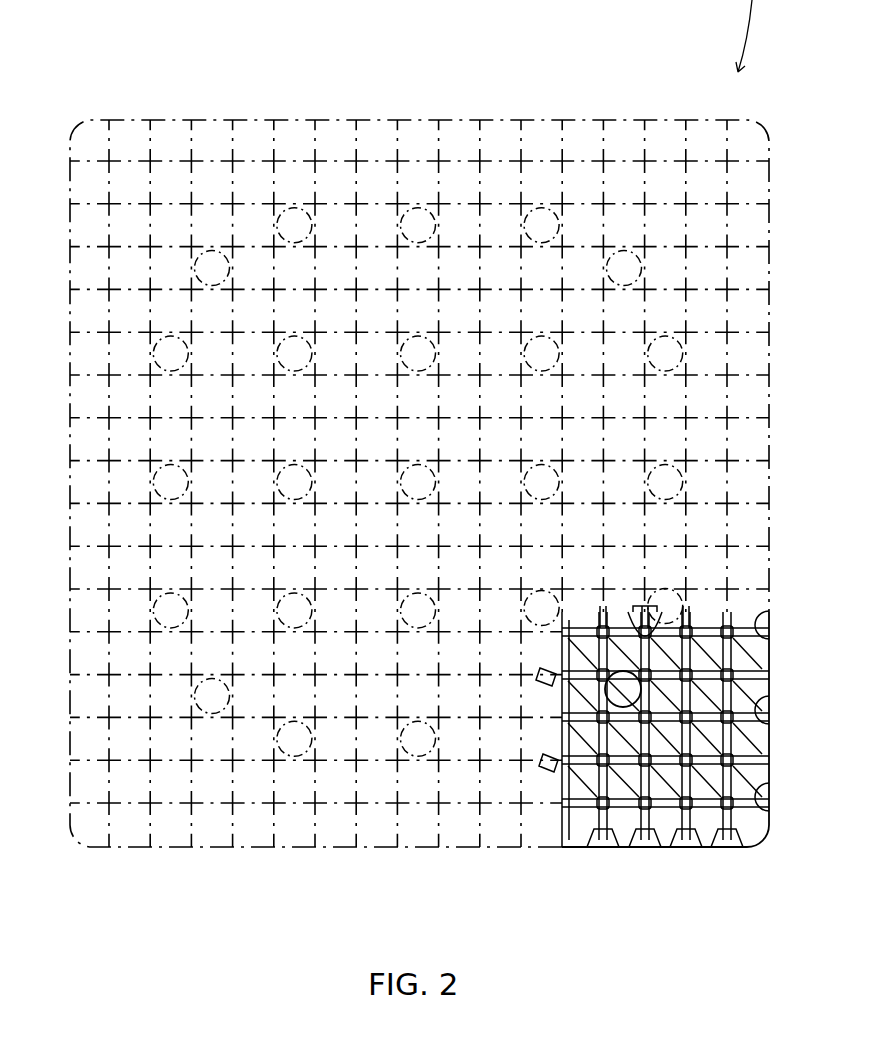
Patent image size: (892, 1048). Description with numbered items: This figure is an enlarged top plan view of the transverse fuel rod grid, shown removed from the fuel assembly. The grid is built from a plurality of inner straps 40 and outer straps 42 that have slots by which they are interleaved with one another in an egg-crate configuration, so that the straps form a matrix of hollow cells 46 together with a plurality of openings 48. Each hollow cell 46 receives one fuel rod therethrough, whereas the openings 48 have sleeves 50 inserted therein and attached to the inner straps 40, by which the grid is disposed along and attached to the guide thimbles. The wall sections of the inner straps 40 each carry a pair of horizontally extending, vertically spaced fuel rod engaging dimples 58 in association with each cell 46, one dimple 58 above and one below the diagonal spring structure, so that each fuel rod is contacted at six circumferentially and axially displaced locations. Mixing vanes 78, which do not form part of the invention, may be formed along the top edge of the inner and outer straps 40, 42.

The inner straps 40 is at (408, 136).
The outer straps 42 is at (64, 236).
The hollow cells 46 is at (629, 128).
The openings 48 is at (607, 672).
The sleeves 50 is at (530, 183).
The fuel rod engaging dimples 58 is at (633, 672).
The mixing vanes 78 is at (545, 680).